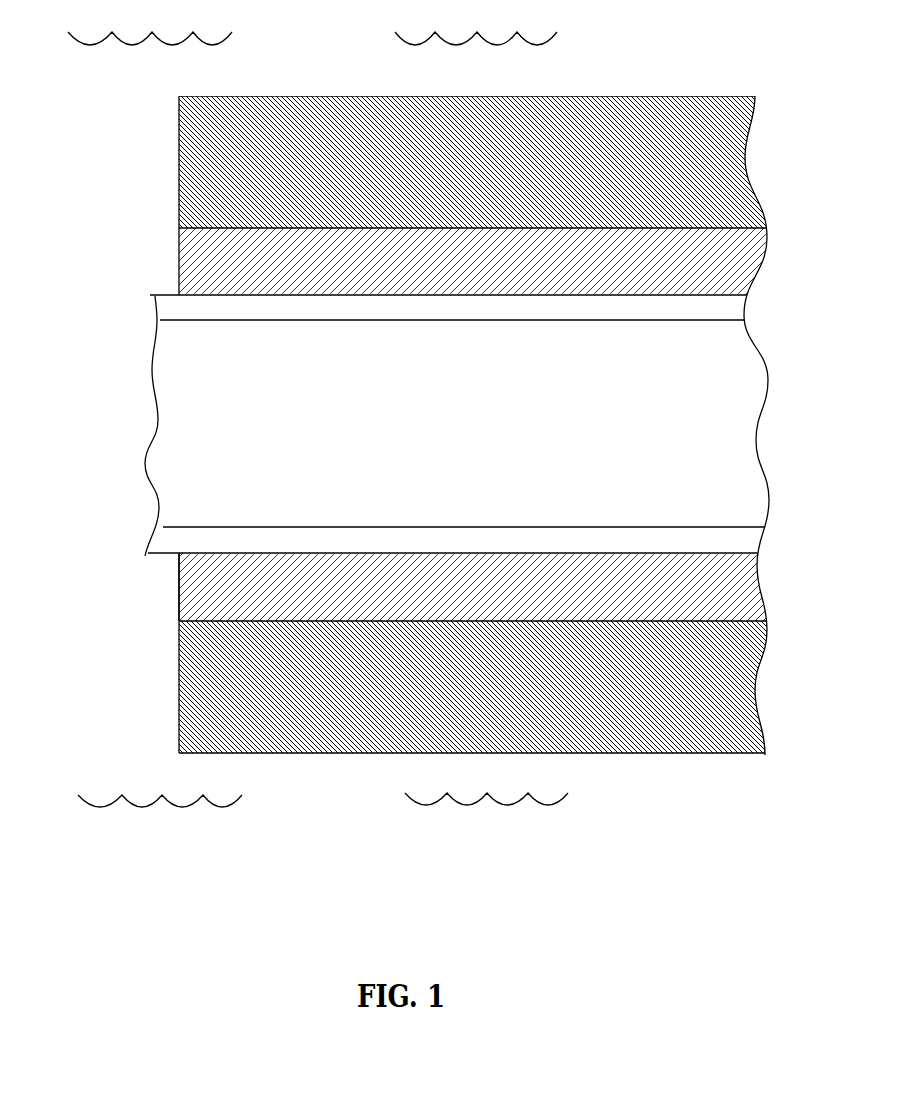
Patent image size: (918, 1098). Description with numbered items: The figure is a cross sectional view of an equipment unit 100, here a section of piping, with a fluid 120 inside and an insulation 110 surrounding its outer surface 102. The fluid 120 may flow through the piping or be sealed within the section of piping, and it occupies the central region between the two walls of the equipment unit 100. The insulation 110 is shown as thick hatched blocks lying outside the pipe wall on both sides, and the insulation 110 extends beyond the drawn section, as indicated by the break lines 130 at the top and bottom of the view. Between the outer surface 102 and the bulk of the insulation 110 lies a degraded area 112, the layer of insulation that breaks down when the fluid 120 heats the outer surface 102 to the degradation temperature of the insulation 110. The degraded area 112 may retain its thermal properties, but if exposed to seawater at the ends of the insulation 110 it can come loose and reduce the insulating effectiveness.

The equipment unit 100 is at (163, 303).
The outer surface 102 is at (733, 286).
The insulation 110 is at (192, 127).
The degraded area 112 is at (175, 228).
The fluid 120 is at (442, 474).
The additional cell layers (continuation) 130 is at (318, 404).